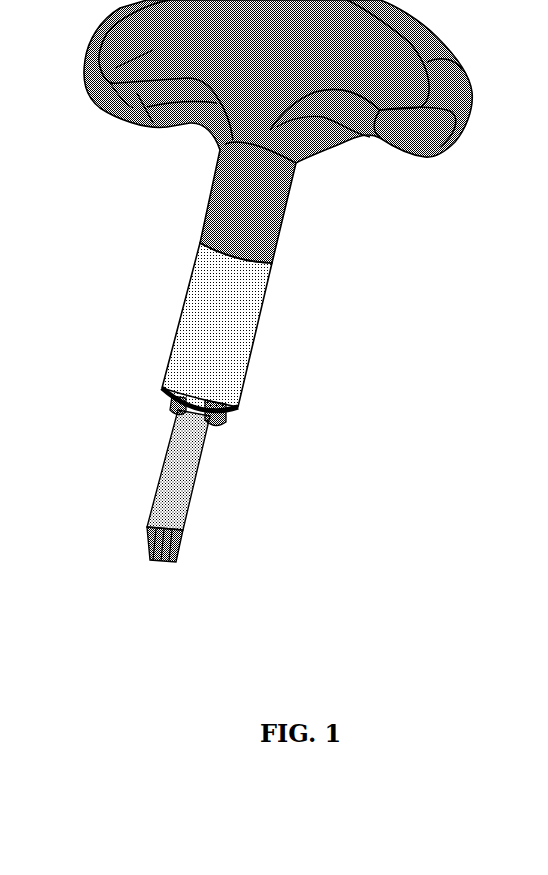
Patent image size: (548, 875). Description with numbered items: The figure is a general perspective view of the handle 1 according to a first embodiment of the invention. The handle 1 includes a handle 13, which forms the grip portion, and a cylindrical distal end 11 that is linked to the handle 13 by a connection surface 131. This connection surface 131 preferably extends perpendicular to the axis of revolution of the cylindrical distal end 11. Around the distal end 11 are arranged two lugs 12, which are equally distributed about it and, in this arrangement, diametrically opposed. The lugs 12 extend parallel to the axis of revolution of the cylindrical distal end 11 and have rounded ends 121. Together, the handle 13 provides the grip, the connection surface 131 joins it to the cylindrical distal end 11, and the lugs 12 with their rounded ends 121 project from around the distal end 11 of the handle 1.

The handle 1 is at (82, 83).
The cylindrical distal end 11 is at (180, 559).
The lugs 12 is at (233, 413).
The rounded ends 121 is at (223, 420).
The handle 13 is at (183, 333).
The connection surface 131 is at (163, 398).